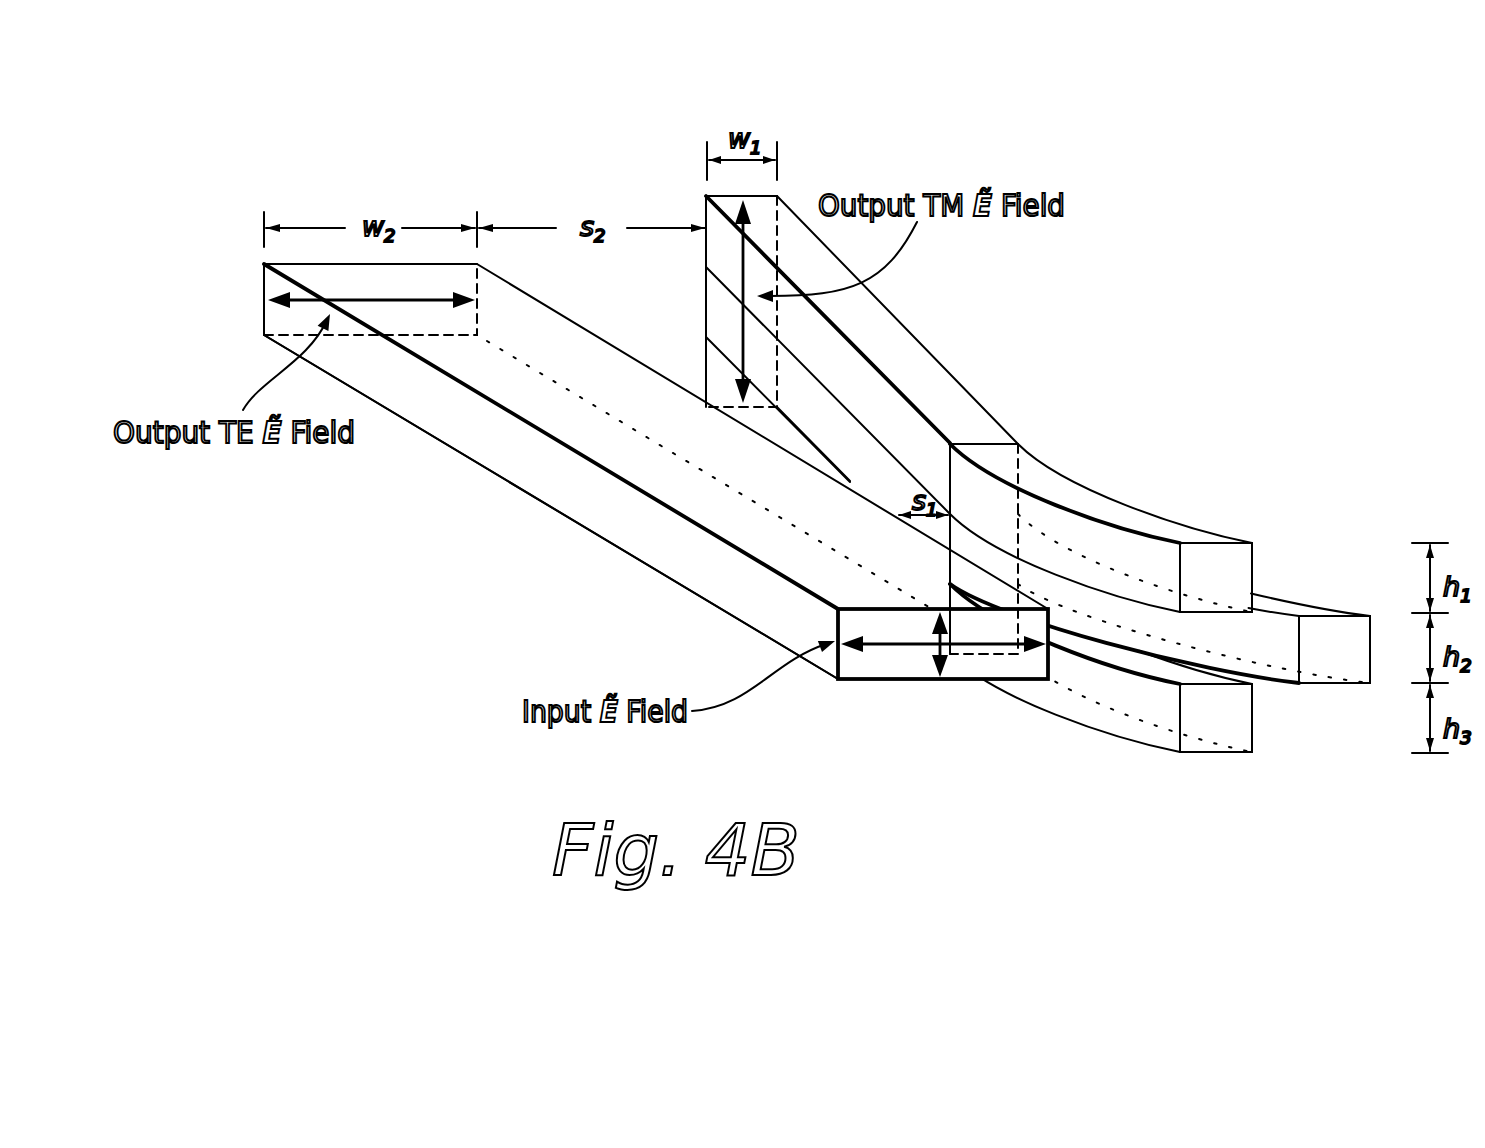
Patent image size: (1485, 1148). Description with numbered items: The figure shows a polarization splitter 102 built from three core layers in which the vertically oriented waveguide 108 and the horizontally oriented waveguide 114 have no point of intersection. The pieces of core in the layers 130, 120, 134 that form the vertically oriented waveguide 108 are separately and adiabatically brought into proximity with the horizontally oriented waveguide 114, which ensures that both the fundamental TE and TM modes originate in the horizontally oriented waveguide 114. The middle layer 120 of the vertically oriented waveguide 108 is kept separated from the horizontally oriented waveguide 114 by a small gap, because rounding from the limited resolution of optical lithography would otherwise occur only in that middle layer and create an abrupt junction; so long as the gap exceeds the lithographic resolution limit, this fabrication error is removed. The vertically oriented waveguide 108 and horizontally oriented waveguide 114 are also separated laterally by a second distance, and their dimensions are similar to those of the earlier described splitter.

The polarization splitter 102 is at (312, 182).
The vertically oriented waveguide 108 is at (958, 338).
The horizontally oriented waveguide 114 is at (504, 499).
The middle layer 120 is at (716, 302).
The core layer 130 is at (712, 229).
The core layer 134 is at (710, 372).